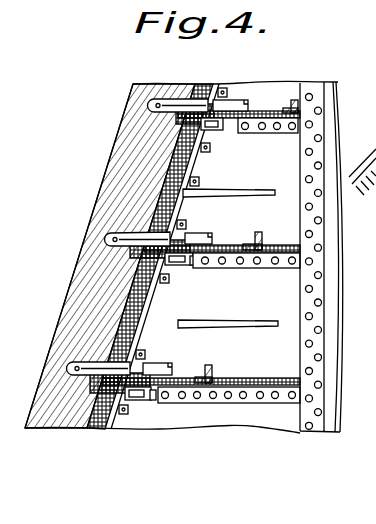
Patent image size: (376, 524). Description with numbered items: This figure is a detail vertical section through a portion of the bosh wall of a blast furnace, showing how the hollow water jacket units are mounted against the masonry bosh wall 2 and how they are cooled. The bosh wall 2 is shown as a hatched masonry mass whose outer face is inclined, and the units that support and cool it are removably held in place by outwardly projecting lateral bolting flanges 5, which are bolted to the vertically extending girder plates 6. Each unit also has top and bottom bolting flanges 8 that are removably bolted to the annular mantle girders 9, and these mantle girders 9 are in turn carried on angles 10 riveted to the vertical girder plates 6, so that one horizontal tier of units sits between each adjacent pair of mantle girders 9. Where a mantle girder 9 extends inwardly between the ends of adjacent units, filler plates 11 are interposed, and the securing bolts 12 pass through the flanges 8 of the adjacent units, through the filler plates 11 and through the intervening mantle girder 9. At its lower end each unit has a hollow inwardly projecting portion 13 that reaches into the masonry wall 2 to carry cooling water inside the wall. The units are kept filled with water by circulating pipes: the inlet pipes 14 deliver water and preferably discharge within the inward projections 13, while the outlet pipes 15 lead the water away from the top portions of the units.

The masonry wall of the bosh 2 is at (107, 183).
The lateral bolting flanges 5 is at (135, 299).
The girder plates 6 is at (217, 417).
The top and bottom bolting flanges 8 is at (214, 131).
The annular mantle girders 9 is at (236, 253).
The angles 10 is at (272, 261).
The filler plates 11 is at (105, 383).
The securing bolts 12 is at (198, 227).
The hollow inwardly projecting portion 13 is at (108, 237).
The inlet pipes 14 is at (256, 190).
The outlet pipes 15 is at (197, 259).